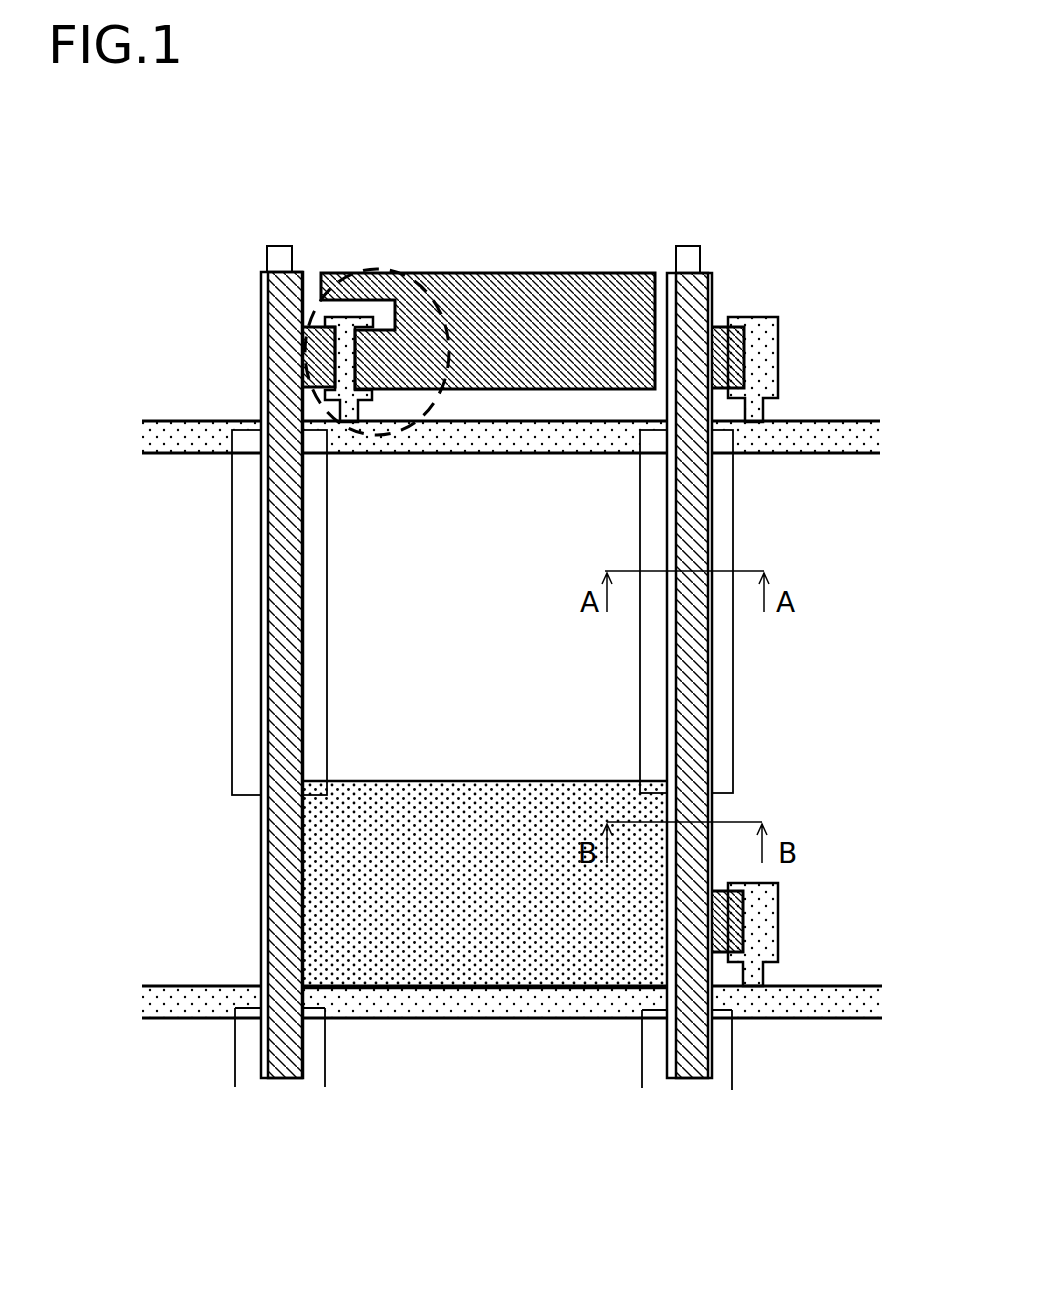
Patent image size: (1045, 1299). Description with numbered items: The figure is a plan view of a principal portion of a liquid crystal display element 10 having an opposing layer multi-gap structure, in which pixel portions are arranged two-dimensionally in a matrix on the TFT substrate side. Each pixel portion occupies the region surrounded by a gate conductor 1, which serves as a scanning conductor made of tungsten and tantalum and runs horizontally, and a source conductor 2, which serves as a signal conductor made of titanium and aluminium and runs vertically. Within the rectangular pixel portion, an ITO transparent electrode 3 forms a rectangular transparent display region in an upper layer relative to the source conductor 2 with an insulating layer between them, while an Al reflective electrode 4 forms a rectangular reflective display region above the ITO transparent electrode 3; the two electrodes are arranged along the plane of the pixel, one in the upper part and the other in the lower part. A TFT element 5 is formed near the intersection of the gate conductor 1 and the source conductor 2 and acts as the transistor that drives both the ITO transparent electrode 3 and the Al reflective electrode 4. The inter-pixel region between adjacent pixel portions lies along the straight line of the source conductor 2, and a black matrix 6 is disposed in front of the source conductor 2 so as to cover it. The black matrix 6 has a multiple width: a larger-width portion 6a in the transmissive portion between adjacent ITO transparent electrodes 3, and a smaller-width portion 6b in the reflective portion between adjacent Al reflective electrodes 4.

The gate conductor 1 is at (760, 442).
The source conductor 2 is at (273, 552).
The ITO transparent electrode 3 is at (538, 656).
The Al reflective electrode 4 is at (475, 957).
The TFT element 5 is at (290, 337).
The black matrix 6 is at (467, 760).
The larger-width portion 6a is at (232, 653).
The smaller-width portion 6b is at (191, 936).
The liquid crystal display element 10 is at (827, 385).